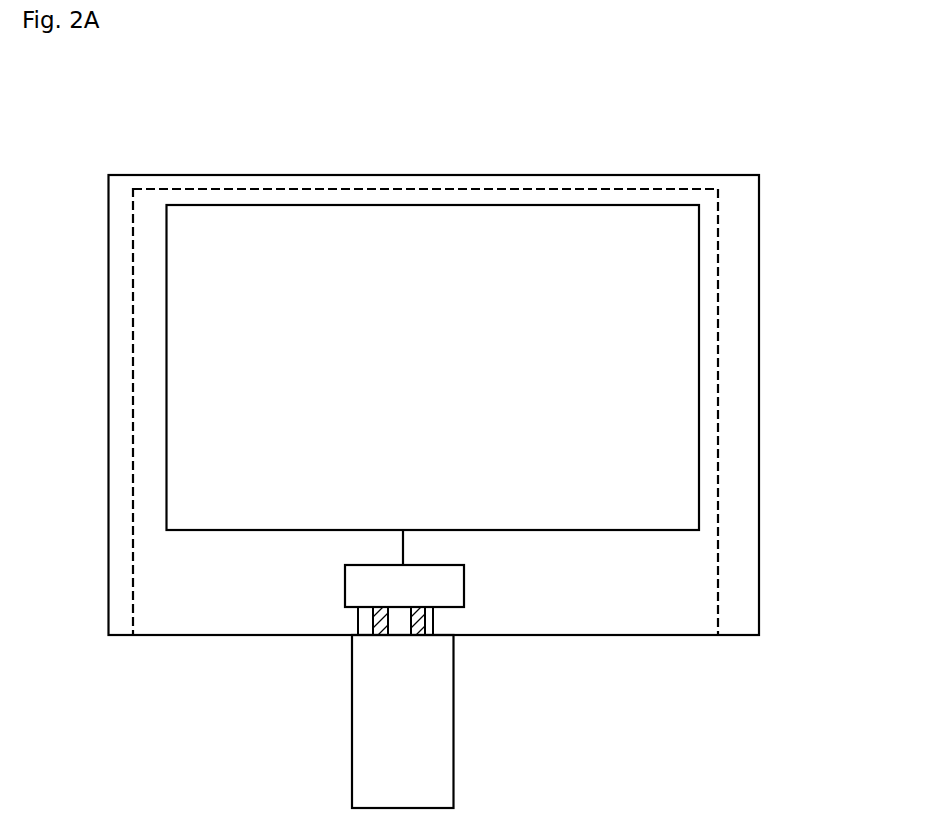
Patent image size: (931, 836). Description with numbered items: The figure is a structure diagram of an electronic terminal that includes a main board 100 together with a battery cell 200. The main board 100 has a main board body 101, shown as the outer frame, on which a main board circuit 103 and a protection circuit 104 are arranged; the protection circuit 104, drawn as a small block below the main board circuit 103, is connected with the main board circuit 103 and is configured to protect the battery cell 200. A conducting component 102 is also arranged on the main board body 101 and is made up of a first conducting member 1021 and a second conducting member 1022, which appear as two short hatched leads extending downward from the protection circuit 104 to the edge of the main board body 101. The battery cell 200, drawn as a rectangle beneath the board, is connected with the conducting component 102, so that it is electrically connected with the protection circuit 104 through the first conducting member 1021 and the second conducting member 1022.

The main board 100 is at (227, 140).
The main board body 101 is at (718, 245).
The conducting component 102 is at (432, 643).
The main board circuit 103 is at (699, 351).
The protection circuit 104 is at (465, 588).
The first conducting member 1021 is at (373, 620).
The second conducting member 1022 is at (417, 623).
The battery cell 200 is at (441, 742).